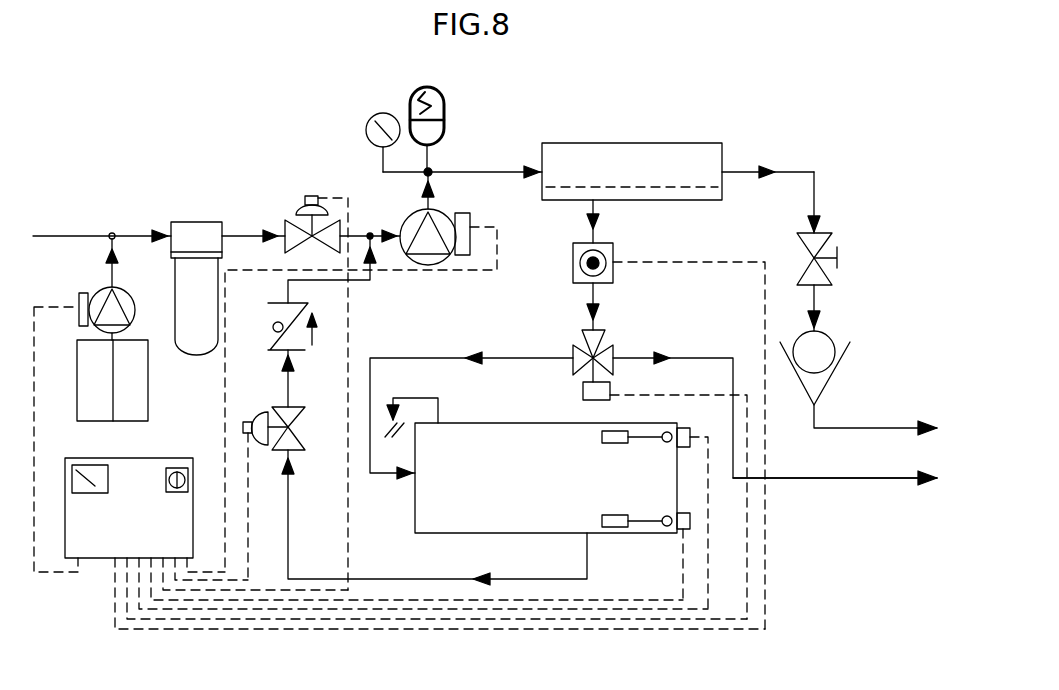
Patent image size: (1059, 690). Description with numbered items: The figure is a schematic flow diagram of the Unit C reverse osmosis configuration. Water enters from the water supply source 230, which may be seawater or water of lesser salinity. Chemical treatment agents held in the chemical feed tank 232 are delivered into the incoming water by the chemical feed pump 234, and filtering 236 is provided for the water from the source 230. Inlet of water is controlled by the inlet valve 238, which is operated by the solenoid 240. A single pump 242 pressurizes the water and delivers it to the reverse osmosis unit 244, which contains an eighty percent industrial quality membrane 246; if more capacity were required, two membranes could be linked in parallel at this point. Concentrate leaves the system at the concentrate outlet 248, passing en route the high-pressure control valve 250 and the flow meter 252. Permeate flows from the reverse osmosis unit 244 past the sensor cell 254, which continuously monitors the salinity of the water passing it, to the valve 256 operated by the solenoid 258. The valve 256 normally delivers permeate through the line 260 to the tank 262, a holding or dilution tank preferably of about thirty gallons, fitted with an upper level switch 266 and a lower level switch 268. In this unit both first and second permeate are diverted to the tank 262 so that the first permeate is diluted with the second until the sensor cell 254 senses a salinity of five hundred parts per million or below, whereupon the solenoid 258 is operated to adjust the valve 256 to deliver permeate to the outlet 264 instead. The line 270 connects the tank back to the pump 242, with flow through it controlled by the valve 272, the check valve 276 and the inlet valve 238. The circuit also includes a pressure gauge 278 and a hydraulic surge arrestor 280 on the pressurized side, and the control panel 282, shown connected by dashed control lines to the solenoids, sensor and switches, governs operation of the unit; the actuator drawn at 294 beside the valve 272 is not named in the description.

The water supply source 230 is at (63, 236).
The chemical feed tank 232 is at (88, 402).
The chemical feed pump 234 is at (98, 297).
The filtering 236 is at (192, 234).
The inlet valve 238 is at (292, 233).
The solenoid 240 is at (317, 203).
The pump 242 is at (430, 255).
The reverse osmosis unit 244 is at (667, 150).
The membrane 246 is at (688, 187).
The concentrate outlet 248 is at (850, 428).
The high-pressure control valve 250 is at (817, 240).
The flow meter 252 is at (820, 372).
The sensor cell 254 is at (605, 255).
The valve 256 is at (610, 345).
The solenoid 258 is at (583, 392).
The line 260 is at (413, 358).
The tank 262 is at (470, 522).
The outlet 264 is at (845, 478).
The upper level switch 266 is at (670, 431).
The lower level switch 268 is at (668, 528).
The line 270 is at (500, 578).
The valve 272 is at (295, 448).
The check valve 276 is at (300, 350).
The pressure gauge 278 is at (383, 115).
The hydraulic surge arrestor 280 is at (444, 110).
The control panel 282 is at (103, 548).
The valve actuator 294 is at (263, 412).